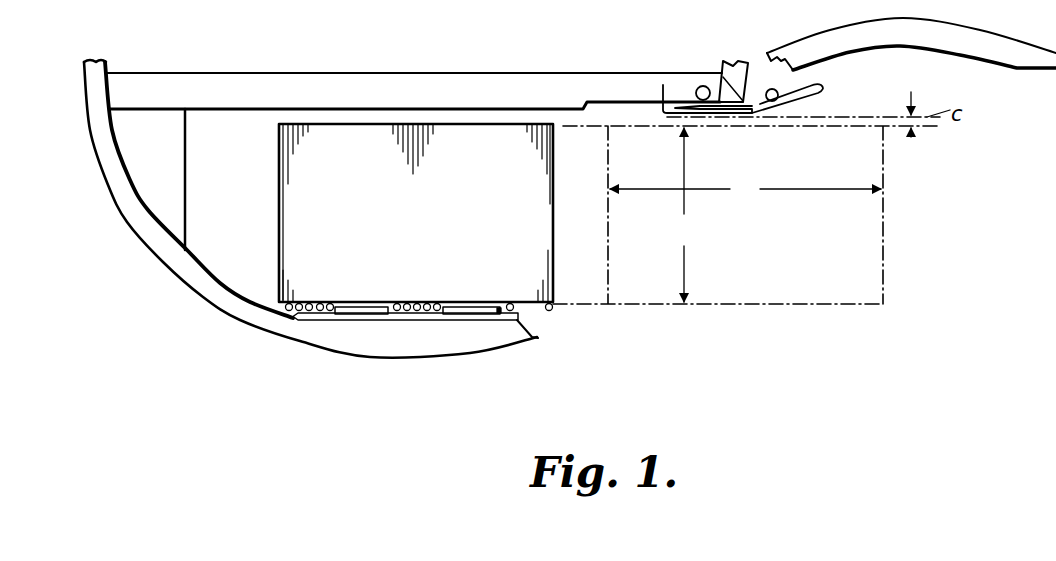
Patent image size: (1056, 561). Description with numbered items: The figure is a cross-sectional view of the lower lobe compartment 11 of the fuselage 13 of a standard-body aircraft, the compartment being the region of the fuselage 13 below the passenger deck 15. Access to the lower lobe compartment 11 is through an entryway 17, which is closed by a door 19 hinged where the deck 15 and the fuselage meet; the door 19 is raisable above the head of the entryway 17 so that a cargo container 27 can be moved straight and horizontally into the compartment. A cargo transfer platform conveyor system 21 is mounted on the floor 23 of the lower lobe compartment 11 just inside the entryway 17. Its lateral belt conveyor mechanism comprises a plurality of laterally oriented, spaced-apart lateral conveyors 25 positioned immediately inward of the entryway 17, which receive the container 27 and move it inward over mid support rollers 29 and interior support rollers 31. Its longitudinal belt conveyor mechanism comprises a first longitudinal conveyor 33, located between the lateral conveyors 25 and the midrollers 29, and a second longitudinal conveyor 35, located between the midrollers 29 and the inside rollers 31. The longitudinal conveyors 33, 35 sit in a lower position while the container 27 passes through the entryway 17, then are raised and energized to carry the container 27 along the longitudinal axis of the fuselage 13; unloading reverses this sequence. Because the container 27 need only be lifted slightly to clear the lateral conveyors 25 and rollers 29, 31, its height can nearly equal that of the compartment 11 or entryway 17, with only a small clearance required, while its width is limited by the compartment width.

The lower lobe compartment 11 is at (240, 190).
The fuselage 13 is at (127, 204).
The passenger deck 15 is at (477, 78).
The entryway 17 is at (652, 240).
The door 19 is at (955, 30).
The cargo transfer platform conveyor system 21 is at (400, 296).
The floor 23 is at (413, 317).
The lateral conveyors 25 is at (519, 304).
The cargo container 27 is at (290, 235).
The mid support rollers 29 is at (418, 303).
The interior support rollers 31 is at (310, 305).
The first longitudinal conveyor 33 is at (478, 310).
The second longitudinal conveyor 35 is at (342, 315).